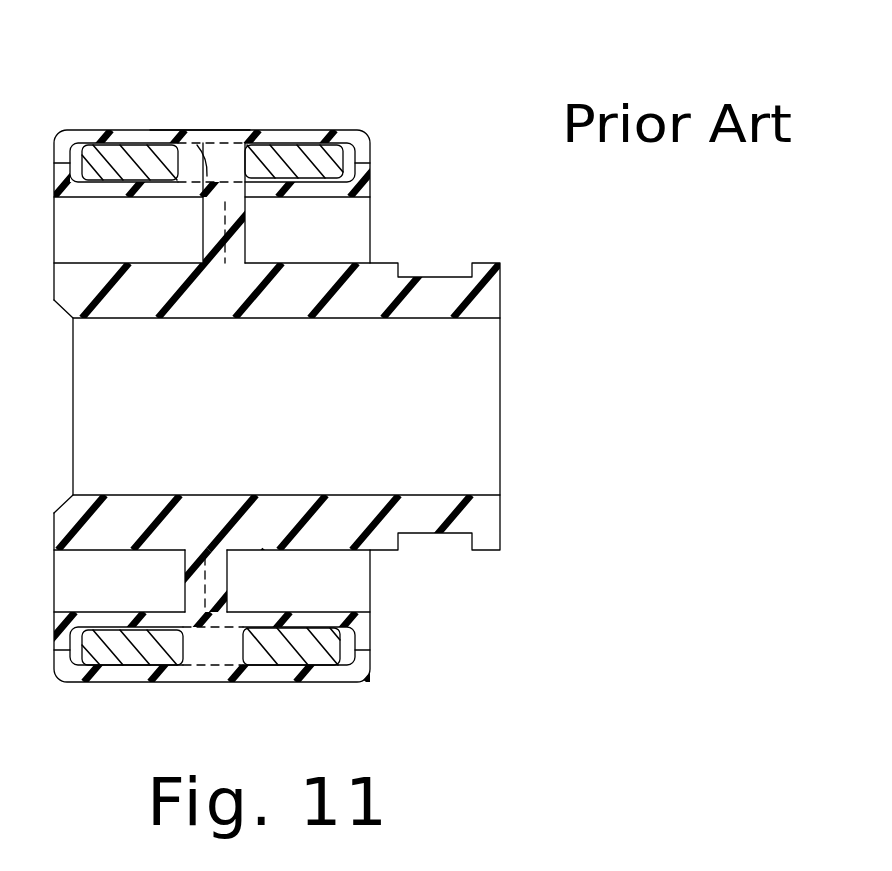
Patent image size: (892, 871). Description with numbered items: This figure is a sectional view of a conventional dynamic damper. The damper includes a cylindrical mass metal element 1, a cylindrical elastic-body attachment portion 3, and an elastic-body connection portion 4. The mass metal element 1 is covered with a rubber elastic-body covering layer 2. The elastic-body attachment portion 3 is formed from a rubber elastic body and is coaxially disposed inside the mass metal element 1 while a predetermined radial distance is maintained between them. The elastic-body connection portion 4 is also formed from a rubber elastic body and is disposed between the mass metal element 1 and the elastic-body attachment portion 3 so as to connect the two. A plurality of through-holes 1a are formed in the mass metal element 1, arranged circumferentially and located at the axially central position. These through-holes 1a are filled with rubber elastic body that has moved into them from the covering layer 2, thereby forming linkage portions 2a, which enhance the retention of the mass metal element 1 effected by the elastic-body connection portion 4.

The mass metal element 1 is at (330, 160).
The through-holes 1a is at (240, 150).
The covering layer 2 is at (140, 128).
The linkage portions 2a is at (190, 128).
The elastic-body attachment portion 3 is at (484, 263).
The elastic-body connection portion 4 is at (250, 243).